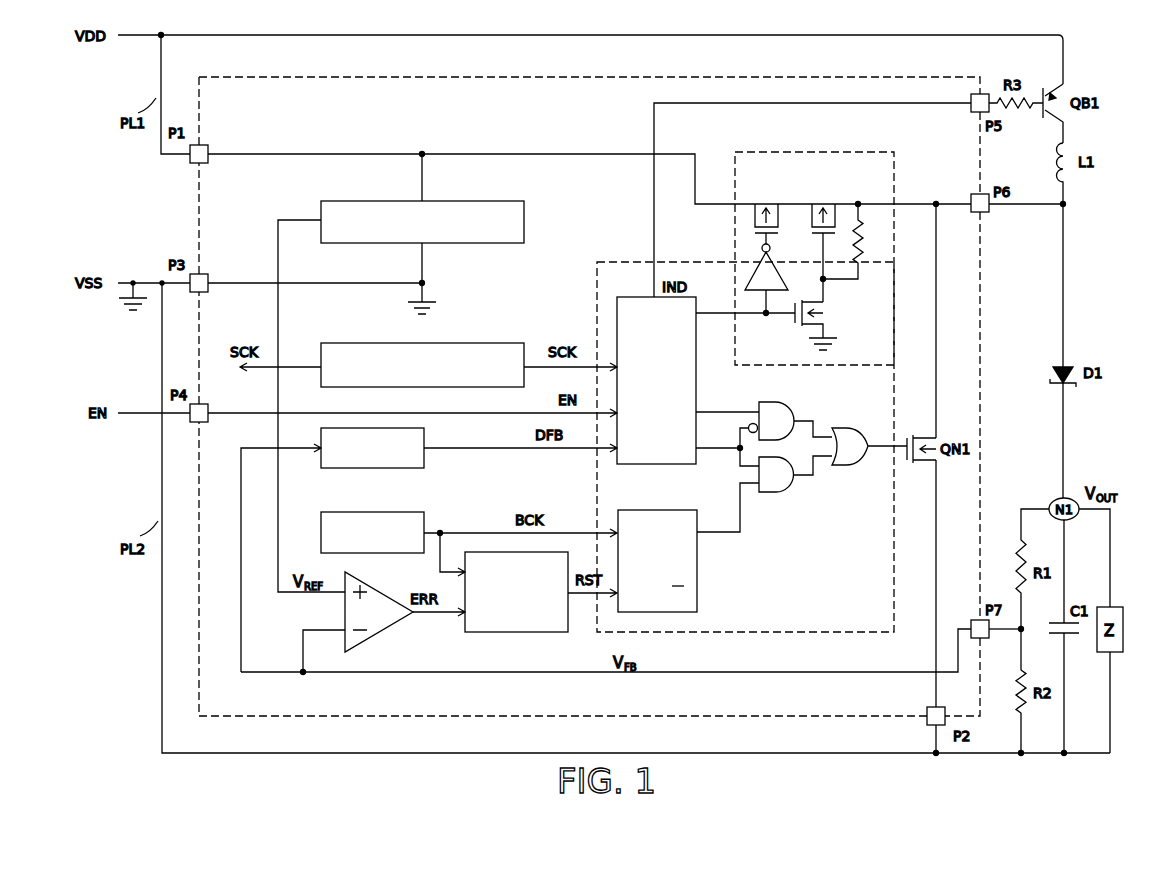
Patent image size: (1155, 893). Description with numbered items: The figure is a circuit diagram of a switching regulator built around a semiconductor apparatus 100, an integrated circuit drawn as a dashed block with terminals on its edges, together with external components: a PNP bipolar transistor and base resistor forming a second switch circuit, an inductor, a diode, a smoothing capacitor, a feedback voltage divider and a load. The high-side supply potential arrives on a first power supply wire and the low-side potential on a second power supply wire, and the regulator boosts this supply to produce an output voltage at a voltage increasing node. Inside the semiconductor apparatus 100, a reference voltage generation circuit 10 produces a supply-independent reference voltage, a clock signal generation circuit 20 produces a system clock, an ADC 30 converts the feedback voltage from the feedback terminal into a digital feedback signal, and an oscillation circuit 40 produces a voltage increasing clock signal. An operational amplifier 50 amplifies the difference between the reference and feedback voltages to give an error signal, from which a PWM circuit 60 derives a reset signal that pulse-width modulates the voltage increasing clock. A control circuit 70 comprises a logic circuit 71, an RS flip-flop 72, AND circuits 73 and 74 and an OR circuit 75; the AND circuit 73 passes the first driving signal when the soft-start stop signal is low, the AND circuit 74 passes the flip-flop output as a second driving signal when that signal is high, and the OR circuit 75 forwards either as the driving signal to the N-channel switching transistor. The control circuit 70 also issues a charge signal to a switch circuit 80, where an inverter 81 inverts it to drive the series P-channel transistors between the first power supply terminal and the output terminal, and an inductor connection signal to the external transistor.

The semiconductor apparatus 100 is at (305, 76).
The reference voltage generation circuit 10 is at (470, 206).
The clock signal generation circuit 20 is at (470, 348).
The ADC 30 is at (426, 437).
The oscillation circuit 40 is at (384, 513).
The operational amplifier 50 is at (382, 591).
The PWM circuit 60 is at (498, 633).
The control circuit 70 is at (806, 634).
The logic circuit 71 is at (660, 466).
The RS flip-flop 72 is at (704, 576).
The AND circuit 73 is at (797, 409).
The AND circuit 74 is at (772, 498).
The OR circuit 75 is at (856, 466).
The switch circuit 80 is at (838, 153).
The inverter 81 is at (772, 266).